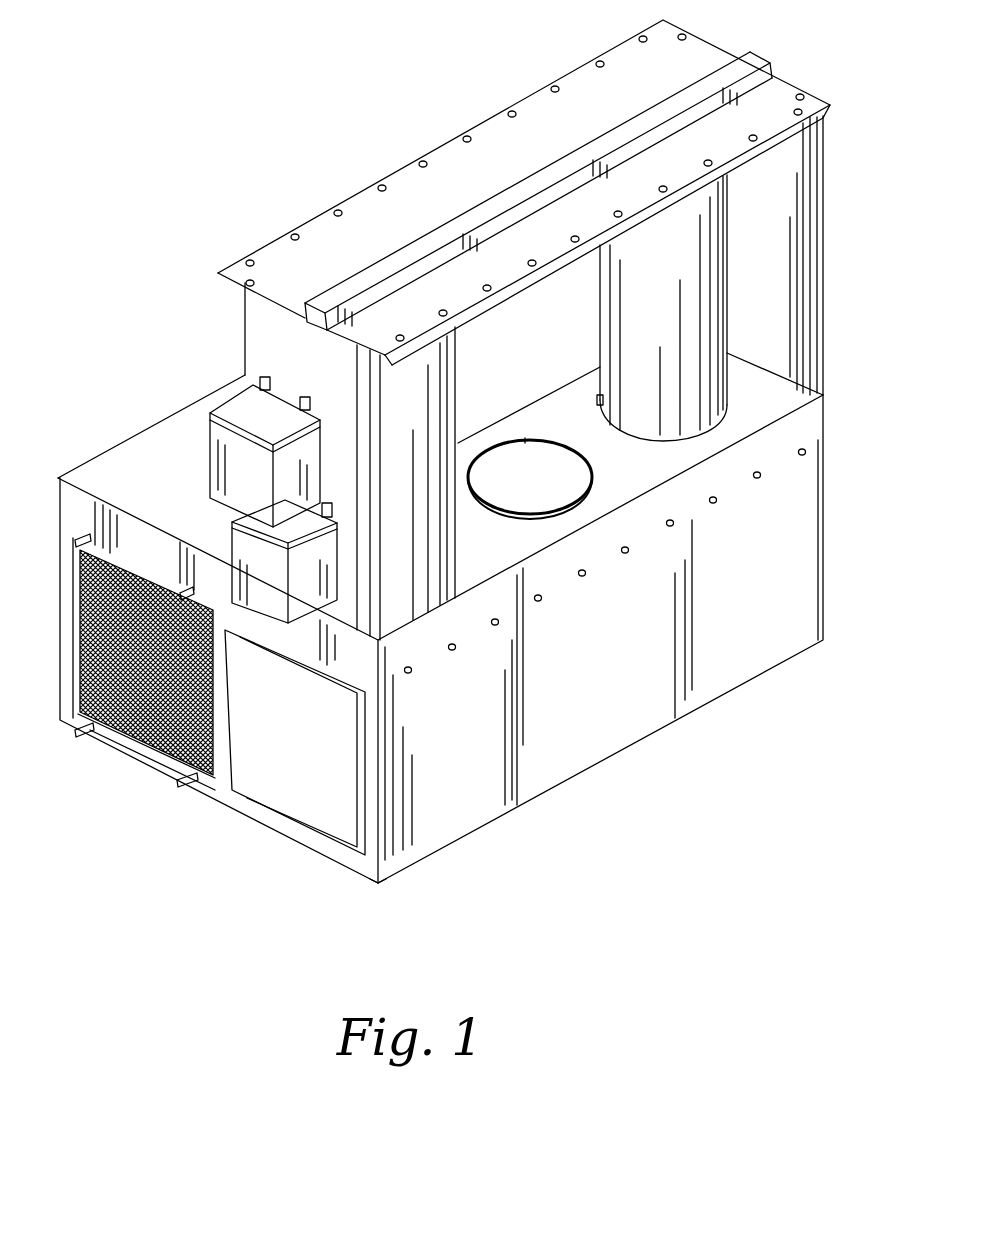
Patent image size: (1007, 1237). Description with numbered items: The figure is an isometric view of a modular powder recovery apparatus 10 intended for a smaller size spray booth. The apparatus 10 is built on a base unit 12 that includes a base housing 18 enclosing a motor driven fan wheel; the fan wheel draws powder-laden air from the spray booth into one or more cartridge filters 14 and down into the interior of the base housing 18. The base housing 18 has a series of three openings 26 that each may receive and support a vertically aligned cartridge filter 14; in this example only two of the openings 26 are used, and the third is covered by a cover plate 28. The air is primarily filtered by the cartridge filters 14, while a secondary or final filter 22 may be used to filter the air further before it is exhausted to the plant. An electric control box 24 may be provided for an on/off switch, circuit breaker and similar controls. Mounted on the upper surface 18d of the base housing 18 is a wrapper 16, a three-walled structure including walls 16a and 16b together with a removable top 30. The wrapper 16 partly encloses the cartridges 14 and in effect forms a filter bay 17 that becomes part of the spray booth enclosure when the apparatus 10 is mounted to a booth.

The modular powder recovery apparatus 10 is at (285, 95).
The base unit 12 is at (345, 876).
The cartridge filter 14 is at (582, 352).
The wrapper 16 is at (840, 186).
The wall of wrapper 16a is at (778, 263).
The wall of wrapper 16b is at (258, 322).
The filter bay 17 is at (779, 348).
The base housing 18 is at (762, 603).
The upper surface of base housing 18d is at (784, 401).
The final filter 22 is at (150, 705).
The electric control box 24 is at (230, 452).
The filter opening 26 is at (392, 590).
The cover plate 28 is at (517, 487).
The removable top 30 is at (580, 78).